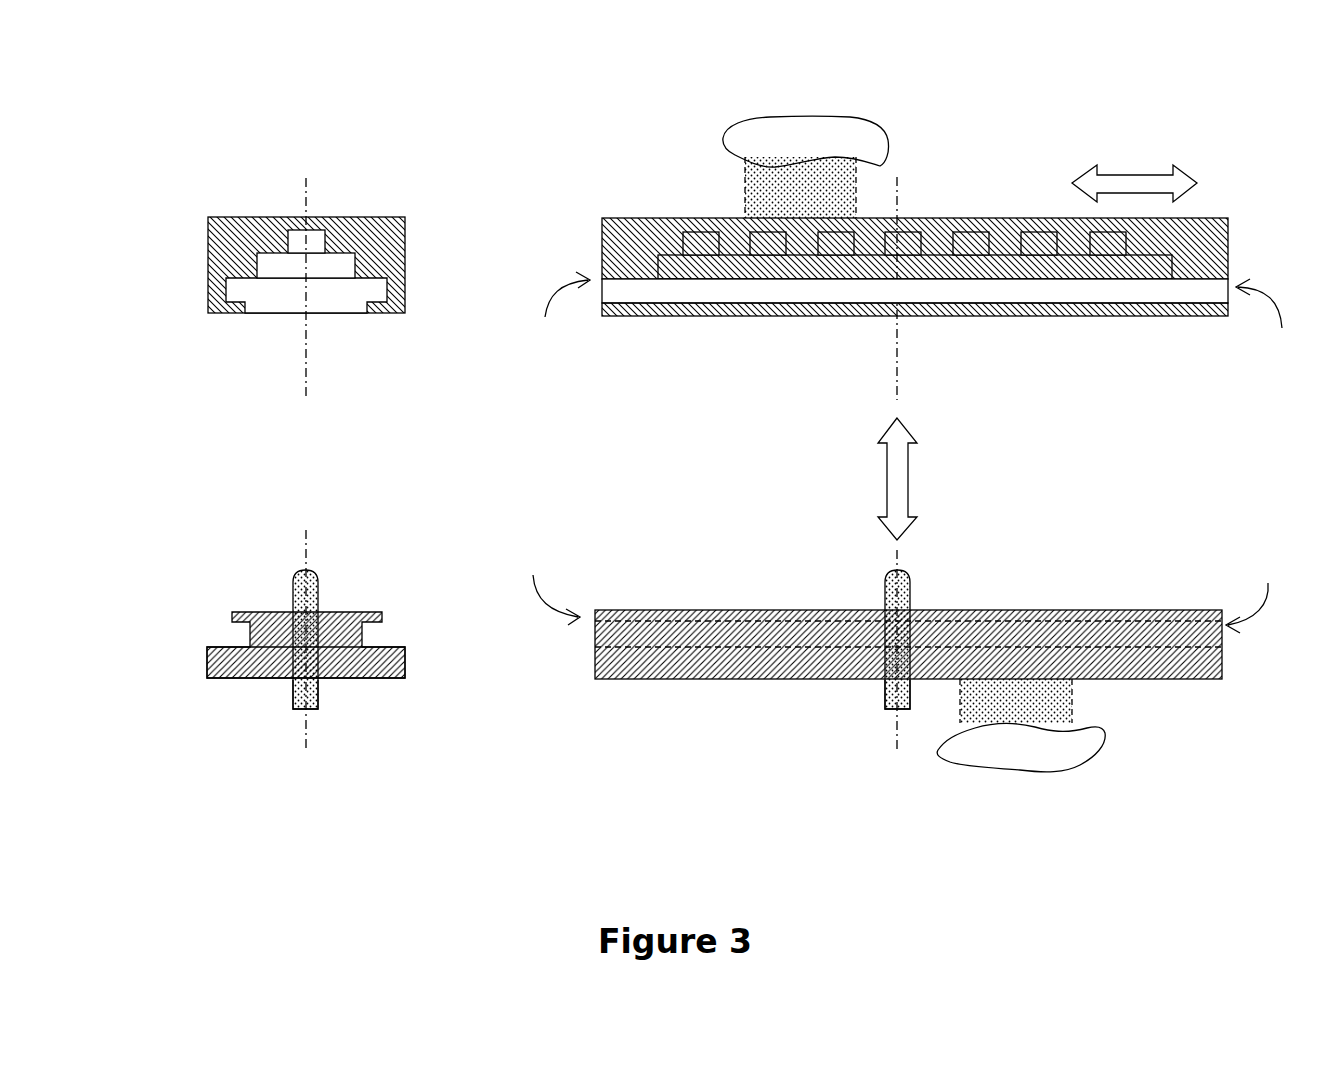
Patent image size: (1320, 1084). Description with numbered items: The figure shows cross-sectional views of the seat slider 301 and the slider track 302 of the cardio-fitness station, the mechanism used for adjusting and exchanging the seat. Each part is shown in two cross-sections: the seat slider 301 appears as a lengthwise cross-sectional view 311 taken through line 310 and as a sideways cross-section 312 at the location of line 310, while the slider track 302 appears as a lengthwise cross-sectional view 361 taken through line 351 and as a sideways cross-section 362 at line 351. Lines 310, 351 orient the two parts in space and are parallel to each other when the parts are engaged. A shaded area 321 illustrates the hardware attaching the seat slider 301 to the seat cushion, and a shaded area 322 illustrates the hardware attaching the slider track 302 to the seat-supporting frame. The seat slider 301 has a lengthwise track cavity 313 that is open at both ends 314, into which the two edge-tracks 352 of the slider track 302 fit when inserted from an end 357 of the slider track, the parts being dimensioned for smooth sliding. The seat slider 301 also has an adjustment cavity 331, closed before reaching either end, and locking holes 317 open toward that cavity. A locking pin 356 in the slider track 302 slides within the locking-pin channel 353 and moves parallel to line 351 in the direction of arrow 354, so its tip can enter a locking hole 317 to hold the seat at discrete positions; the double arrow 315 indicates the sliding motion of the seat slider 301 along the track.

The seat slider 301 is at (198, 75).
The slider track 302 is at (204, 481).
The line 310 is at (308, 183).
The lengthwise cross-sectional view of the seat slider 311 is at (605, 222).
The sideways cross-section of the seat slider 312 is at (402, 242).
The lengthwise track cavity 313 is at (232, 283).
The end of the seat slider 314 is at (916, 323).
The horizontal sliding motion arrow 315 is at (1130, 177).
The locking hole 317 is at (298, 240).
The shaded area 321 is at (787, 187).
The shaded area 322 is at (1075, 728).
The adjustment cavity 331 is at (323, 267).
The line 351 is at (308, 537).
The edge-track 352 is at (235, 613).
The locking-pin channel 353 is at (325, 660).
The arrow 354 is at (897, 497).
The locking pin 356 is at (297, 690).
The end of the slider track 357 is at (904, 584).
The lengthwise cross-sectional view of the slider track 361 is at (605, 667).
The sideways cross-section of the slider track 362 is at (400, 663).